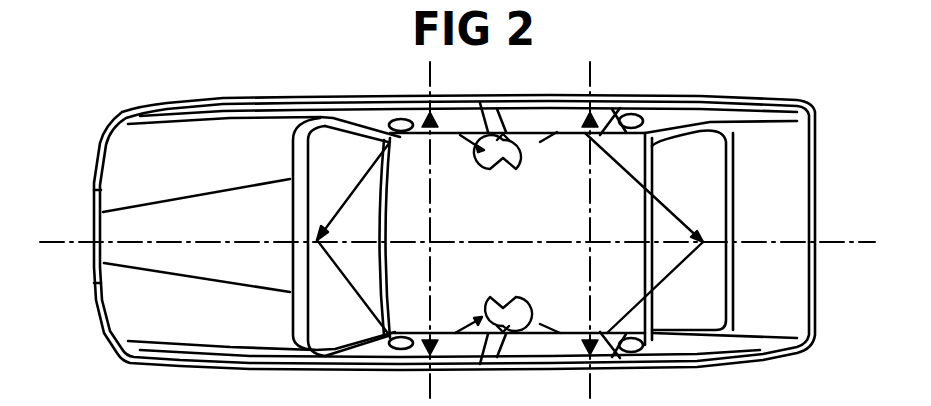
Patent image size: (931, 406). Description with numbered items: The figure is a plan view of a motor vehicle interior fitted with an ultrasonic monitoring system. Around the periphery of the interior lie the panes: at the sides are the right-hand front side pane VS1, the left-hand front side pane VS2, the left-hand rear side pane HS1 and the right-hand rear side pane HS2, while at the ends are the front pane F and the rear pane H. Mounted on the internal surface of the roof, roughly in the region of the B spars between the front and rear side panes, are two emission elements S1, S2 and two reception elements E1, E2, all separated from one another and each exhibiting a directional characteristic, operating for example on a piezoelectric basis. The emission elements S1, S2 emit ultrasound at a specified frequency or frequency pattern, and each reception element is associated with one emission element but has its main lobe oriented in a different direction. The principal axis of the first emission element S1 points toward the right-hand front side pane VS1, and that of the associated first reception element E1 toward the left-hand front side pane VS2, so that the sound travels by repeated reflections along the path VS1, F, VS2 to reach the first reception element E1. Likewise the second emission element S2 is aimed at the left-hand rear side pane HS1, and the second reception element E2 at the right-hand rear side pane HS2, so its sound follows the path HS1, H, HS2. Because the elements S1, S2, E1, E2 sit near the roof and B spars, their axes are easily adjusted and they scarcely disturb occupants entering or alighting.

The front pane F is at (320, 158).
The rear pane H is at (693, 160).
The right-hand front side pane VS1 is at (400, 116).
The left-hand front side pane VS2 is at (402, 350).
The left-hand rear side pane HS1 is at (530, 350).
The right-hand rear side pane HS2 is at (527, 117).
The first emission element S1 is at (486, 156).
The second emission element S2 is at (533, 300).
The first reception element E1 is at (491, 300).
The second reception element E2 is at (520, 158).